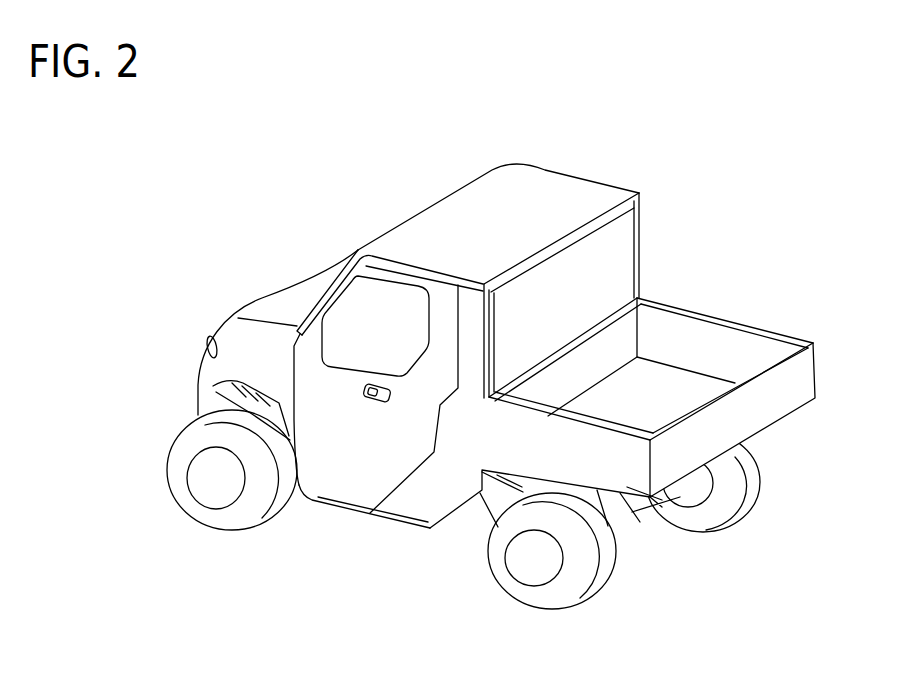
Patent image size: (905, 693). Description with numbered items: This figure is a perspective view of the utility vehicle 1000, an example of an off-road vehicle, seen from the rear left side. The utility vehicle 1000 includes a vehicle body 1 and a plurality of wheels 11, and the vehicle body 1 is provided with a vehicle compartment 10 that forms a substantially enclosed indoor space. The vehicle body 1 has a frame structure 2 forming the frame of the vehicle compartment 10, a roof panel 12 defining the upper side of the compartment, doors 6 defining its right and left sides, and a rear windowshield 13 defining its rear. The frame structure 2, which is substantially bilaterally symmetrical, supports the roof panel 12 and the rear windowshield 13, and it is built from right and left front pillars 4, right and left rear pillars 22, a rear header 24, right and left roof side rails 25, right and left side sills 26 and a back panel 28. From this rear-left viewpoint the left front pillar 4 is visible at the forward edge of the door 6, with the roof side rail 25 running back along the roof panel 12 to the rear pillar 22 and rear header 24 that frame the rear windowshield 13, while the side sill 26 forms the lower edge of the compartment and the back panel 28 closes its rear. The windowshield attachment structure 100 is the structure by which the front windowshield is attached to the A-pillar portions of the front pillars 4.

The utility vehicle 1000 is at (370, 183).
The vehicle body 1 is at (365, 238).
The windowshield attachment structure 100 is at (320, 288).
The front pillar 4 is at (300, 318).
The roof side rail 25 is at (430, 270).
The rear pillar 22 is at (492, 323).
The roof panel 12 is at (542, 192).
The vehicle compartment 10 is at (572, 208).
The rear header 24 is at (617, 218).
The rear windowshield 13 is at (613, 273).
The back panel 28 is at (587, 328).
The side sill 26 is at (343, 510).
The frame structure 2 is at (385, 521).
The door 6 is at (398, 463).
The wheel 11 is at (598, 567).